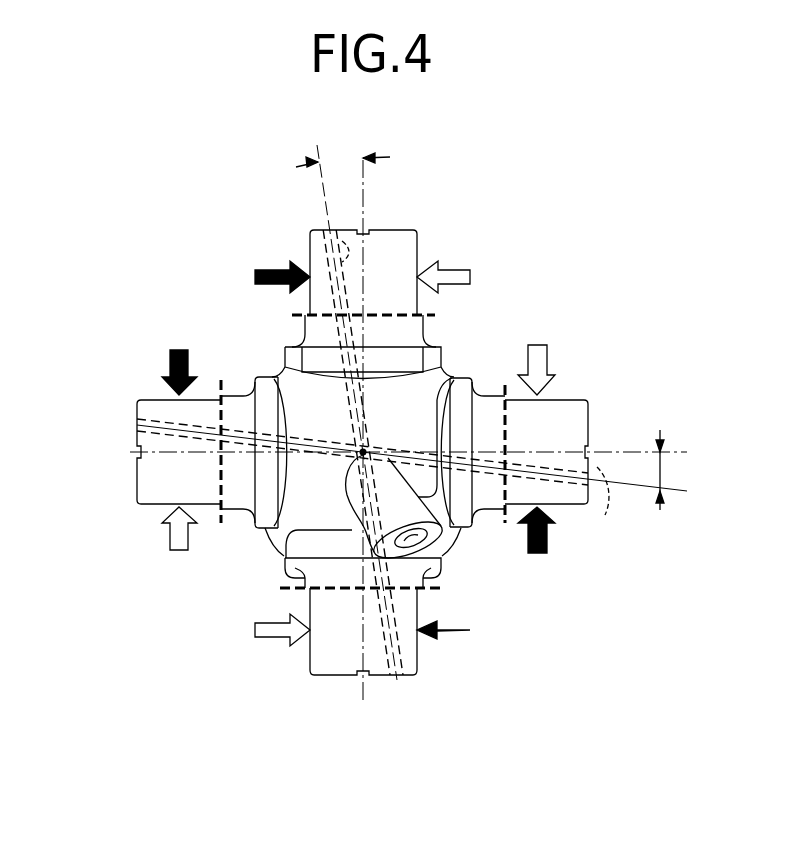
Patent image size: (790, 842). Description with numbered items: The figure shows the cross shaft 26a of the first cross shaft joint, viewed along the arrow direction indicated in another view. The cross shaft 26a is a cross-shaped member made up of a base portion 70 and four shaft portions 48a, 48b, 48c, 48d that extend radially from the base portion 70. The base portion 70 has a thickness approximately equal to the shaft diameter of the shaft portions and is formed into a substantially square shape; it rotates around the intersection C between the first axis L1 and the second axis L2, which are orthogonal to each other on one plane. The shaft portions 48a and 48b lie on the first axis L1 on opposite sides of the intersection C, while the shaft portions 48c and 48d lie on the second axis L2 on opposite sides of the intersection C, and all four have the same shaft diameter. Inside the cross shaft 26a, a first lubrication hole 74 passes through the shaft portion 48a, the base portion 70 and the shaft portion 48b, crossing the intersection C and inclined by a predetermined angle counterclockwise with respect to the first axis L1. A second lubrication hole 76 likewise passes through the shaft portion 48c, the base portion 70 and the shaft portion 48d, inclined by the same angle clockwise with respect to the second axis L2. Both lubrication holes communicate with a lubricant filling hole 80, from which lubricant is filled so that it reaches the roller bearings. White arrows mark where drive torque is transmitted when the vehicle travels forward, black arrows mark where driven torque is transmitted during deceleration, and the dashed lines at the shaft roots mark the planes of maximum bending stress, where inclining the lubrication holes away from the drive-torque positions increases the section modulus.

The cross shaft 26a is at (368, 441).
The shaft portion 48a is at (408, 249).
The shaft portion 48b is at (330, 667).
The shaft portion 48c is at (150, 497).
The shaft portion 48d is at (567, 410).
The base portion 70 is at (295, 388).
The first lubrication hole 74 is at (343, 241).
The second lubrication hole 76 is at (604, 504).
The lubricant filling hole 80 is at (418, 532).
The intersection C is at (366, 450).
The first axis L1 is at (367, 700).
The second axis L2 is at (105, 451).